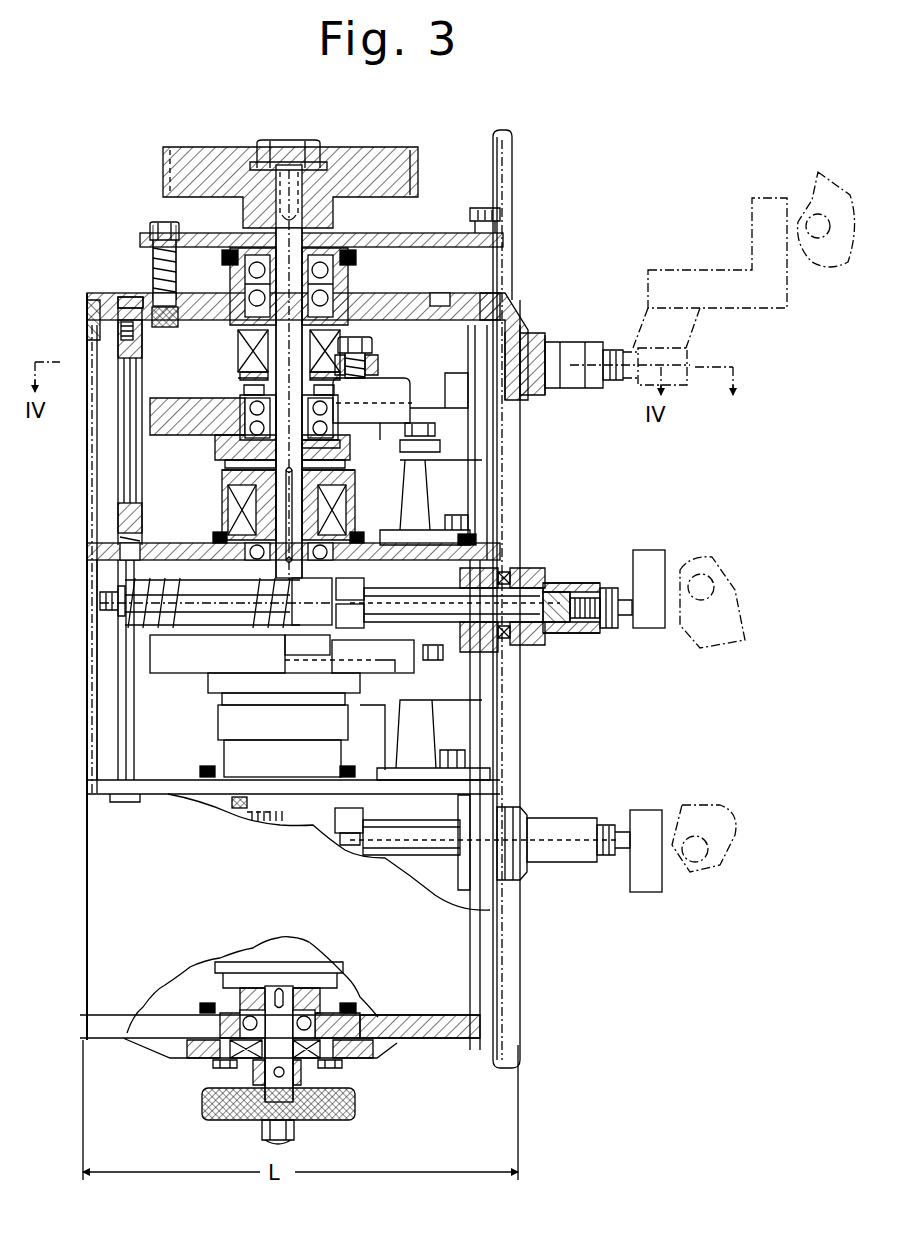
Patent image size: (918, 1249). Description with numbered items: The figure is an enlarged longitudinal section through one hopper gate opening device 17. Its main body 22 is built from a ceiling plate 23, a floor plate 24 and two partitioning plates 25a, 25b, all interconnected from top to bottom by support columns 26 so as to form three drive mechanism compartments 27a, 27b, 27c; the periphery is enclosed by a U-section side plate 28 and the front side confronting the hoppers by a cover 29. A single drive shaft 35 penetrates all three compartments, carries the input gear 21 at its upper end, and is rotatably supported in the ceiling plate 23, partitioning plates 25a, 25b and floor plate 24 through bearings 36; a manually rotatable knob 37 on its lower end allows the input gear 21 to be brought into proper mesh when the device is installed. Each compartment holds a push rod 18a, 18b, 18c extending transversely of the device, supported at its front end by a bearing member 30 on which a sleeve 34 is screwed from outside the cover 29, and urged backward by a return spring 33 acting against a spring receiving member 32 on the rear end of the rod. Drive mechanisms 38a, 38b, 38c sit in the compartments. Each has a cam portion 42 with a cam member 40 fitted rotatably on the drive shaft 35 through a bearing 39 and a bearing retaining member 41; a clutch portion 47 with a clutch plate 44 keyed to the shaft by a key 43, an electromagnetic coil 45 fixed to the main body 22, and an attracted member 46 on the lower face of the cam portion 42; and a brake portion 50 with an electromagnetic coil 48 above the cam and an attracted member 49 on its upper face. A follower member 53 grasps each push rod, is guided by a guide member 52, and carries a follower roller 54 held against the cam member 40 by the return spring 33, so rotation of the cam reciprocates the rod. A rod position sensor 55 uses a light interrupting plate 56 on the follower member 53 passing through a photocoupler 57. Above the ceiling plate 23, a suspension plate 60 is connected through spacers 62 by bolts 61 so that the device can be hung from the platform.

The hopper gate opening device 17 is at (565, 165).
The push rod 18a is at (583, 390).
The push rod 18b is at (568, 585).
The push rod 18c is at (572, 822).
The input gear 21 is at (375, 160).
The main body 22 is at (88, 296).
The ceiling plate 23 is at (100, 318).
The floor plate 24 is at (190, 1057).
The partitioning plate 25a is at (100, 532).
The partitioning plate 25b is at (108, 777).
The support column 26 is at (98, 432).
The drive mechanism compartment 27a is at (148, 479).
The drive mechanism compartment 27b is at (130, 690).
The drive mechanism compartment 27c is at (105, 762).
The side plate 28 is at (100, 868).
The cover 29 is at (503, 698).
The bearing member 30 is at (472, 580).
The spring receiving member 32 is at (100, 597).
The return spring 33 is at (118, 628).
The sleeve 34 is at (565, 628).
The drive shaft 35 is at (300, 190).
The bearing 36 is at (318, 300).
The manually rotatable knob 37 is at (336, 1120).
The drive mechanism 38a is at (186, 388).
The drive mechanism 38b is at (216, 700).
The drive mechanism 38c is at (208, 975).
The bearing 39 is at (232, 410).
The cam member 40 is at (228, 442).
The bearing retaining member 41 is at (222, 462).
The cam portion 42 is at (170, 450).
The key 43 is at (328, 603).
The clutch plate 44 is at (240, 505).
The electromagnetic coil 45 is at (258, 520).
The attracted member 46 is at (240, 480).
The clutch portion 47 is at (182, 485).
The electromagnetic coil 48 is at (252, 350).
The attracted member 49 is at (252, 368).
The brake portion 50 is at (196, 330).
The guide member 52 is at (490, 320).
The follower member 53 is at (363, 356).
The follower roller 54 is at (392, 398).
The rod position sensor 55 is at (358, 478).
The light interrupting plate 56 is at (368, 440).
The photocoupler 57 is at (400, 458).
The suspension plate 60 is at (375, 240).
The bolt 61 is at (152, 305).
The spacer 62 is at (165, 245).